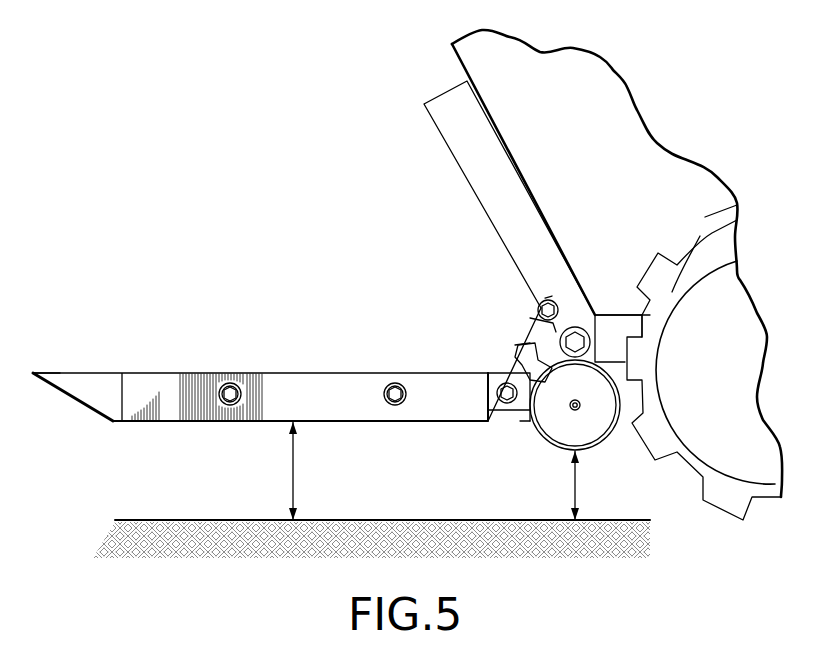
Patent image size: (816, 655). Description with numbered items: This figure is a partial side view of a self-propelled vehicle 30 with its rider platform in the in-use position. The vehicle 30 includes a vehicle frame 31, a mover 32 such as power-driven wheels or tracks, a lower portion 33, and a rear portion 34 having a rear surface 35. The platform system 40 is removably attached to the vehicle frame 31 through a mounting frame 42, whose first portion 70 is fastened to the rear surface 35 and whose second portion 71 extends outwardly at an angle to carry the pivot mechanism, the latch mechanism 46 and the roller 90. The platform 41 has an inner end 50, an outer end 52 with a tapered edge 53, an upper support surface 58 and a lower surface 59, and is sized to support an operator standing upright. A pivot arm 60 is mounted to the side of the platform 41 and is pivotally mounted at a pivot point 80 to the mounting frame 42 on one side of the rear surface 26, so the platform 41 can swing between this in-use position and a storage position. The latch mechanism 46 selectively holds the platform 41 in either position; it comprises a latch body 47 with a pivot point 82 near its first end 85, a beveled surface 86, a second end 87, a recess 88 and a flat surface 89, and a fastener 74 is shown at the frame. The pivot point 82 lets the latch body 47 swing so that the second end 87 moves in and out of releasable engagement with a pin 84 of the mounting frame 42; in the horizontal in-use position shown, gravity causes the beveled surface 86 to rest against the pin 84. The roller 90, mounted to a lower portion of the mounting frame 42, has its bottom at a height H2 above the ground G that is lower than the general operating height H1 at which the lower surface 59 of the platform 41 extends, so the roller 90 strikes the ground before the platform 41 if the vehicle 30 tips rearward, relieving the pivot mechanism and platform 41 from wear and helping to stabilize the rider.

The rear surface 26 is at (574, 268).
The self-propelled vehicle 30 is at (283, 198).
The vehicle frame 31 is at (612, 85).
The mover 32 is at (722, 428).
The lower portion 33 is at (689, 228).
The rear portion 34 is at (584, 175).
The rear surface 35 is at (460, 66).
The platform system 40 is at (258, 401).
The rider platform 41 is at (308, 408).
The mounting frame 42 is at (456, 198).
The latch mechanism 46 is at (523, 422).
The latch body 47 is at (509, 370).
The inner end 50 is at (489, 370).
The outer end 52 is at (52, 372).
The beveled cutting edge 53 is at (82, 396).
The upper support surface 58 is at (223, 372).
The lower surface 59 is at (230, 422).
The pivot arm 60 is at (489, 407).
The first portion 70 is at (503, 140).
The second portion 71 is at (503, 188).
The pivot bolt 74 is at (583, 327).
The pivot point 80 is at (606, 320).
The pivot point 82 is at (485, 420).
The pin 84 is at (550, 299).
The first end 85 is at (510, 420).
The beveled surface 86 is at (535, 322).
The second end 87 is at (545, 300).
The recess 88 is at (518, 345).
The flat surface 89 is at (540, 350).
The roller 90 is at (592, 434).
The ground G is at (363, 520).
The general operating height H1 is at (309, 471).
The height H2 is at (591, 485).